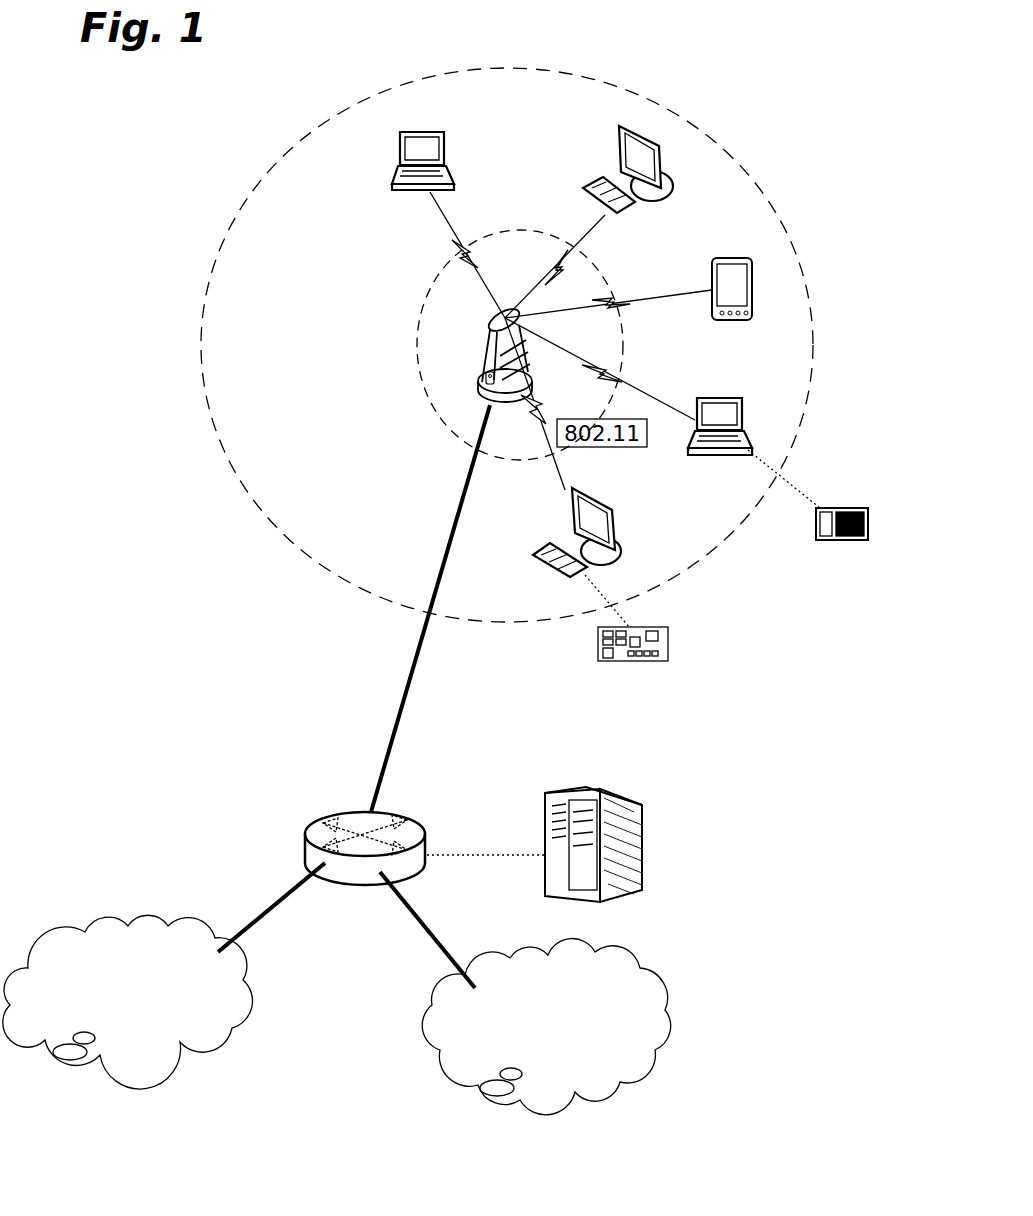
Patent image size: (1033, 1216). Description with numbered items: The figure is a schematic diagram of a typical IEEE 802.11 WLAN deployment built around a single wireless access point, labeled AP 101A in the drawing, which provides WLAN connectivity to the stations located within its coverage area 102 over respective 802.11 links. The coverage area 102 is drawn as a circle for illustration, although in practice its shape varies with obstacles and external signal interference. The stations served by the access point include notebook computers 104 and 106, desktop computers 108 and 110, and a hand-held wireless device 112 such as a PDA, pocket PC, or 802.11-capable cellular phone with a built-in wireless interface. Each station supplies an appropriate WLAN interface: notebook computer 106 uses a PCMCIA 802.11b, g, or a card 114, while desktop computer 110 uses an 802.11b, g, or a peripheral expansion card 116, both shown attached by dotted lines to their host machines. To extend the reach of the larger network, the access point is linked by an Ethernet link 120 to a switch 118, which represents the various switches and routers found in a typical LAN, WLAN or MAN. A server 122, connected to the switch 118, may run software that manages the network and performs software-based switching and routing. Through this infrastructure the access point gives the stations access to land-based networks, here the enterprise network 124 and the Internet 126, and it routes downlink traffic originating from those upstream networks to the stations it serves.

The coverage area 102 is at (803, 347).
The access point 101A is at (489, 362).
The notebook computer 104 is at (430, 140).
The desktop computer 108 is at (664, 134).
The hand-held wireless device 112 is at (748, 274).
The notebook computer 106 is at (726, 404).
The PCMCIA 802.11 card 114 is at (856, 508).
The desktop computer 110 is at (620, 548).
The peripheral expansion card 116 is at (672, 640).
The Ethernet link 120 is at (398, 726).
The switch 118 is at (318, 836).
The server 122 is at (633, 808).
The enterprise network 124 is at (118, 930).
The Internet 126 is at (536, 956).